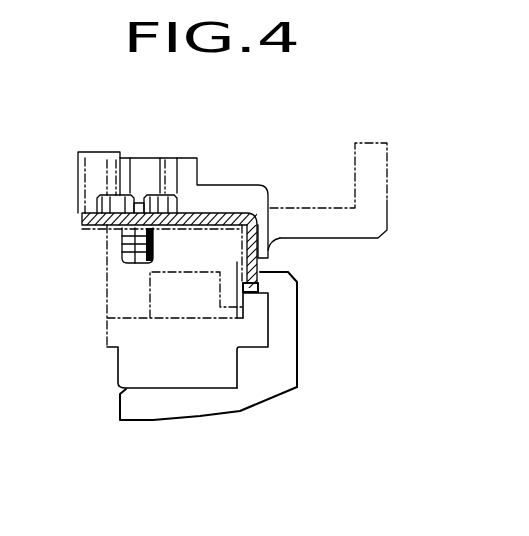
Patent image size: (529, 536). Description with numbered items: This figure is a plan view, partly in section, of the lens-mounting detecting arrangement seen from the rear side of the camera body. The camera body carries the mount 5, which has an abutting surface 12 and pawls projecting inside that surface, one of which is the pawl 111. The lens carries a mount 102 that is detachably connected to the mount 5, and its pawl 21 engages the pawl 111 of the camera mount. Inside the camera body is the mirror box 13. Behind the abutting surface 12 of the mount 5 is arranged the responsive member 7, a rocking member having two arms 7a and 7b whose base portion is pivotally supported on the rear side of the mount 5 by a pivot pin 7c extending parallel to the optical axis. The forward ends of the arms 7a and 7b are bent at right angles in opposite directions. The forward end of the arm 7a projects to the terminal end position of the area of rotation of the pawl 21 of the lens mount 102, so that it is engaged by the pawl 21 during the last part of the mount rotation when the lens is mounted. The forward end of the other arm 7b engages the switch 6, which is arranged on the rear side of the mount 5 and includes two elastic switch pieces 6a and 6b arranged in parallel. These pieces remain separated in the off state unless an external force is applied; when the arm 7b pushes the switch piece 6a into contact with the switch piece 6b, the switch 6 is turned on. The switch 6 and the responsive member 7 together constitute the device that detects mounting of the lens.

The mount 5 is at (108, 355).
The switch 6 is at (208, 161).
The switch piece 6a is at (131, 166).
The switch piece 6b is at (178, 166).
The responsive member 7 is at (72, 230).
The arm 7a is at (262, 262).
The arm 7b is at (93, 160).
The pivot pin 7c is at (123, 243).
The abutting surface 12 is at (148, 378).
The mirror box 13 is at (387, 167).
The pawl 21 is at (277, 282).
The mount 102 is at (207, 400).
The pawl 111 is at (255, 327).